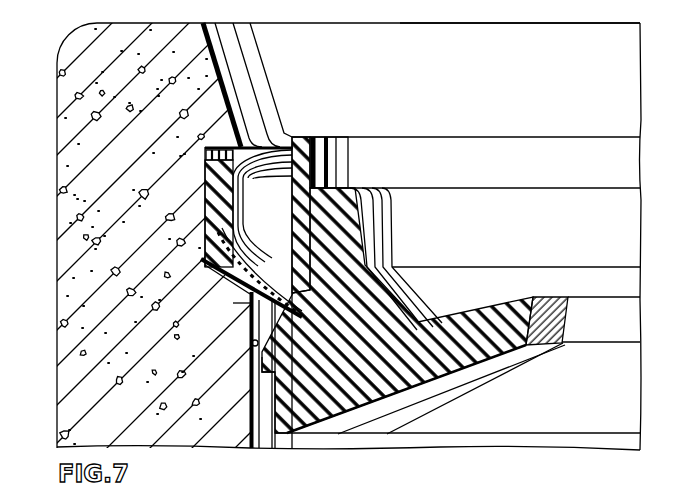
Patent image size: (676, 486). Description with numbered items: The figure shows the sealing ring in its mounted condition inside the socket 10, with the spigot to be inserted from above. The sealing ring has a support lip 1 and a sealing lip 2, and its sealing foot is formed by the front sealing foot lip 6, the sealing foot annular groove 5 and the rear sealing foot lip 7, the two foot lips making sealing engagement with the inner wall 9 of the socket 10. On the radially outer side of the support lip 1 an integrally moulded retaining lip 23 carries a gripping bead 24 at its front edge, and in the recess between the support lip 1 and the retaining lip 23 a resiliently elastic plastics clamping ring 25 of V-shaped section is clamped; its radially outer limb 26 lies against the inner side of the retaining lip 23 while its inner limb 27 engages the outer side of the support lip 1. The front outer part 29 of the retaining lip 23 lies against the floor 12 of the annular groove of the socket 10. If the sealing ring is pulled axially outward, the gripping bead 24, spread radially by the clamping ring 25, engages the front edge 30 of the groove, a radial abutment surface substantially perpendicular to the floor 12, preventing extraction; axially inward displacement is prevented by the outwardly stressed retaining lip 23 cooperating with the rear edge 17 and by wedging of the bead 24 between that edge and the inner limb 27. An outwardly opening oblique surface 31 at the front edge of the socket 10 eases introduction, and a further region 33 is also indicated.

The support lip 1 is at (520, 247).
The sealing lip 2 is at (585, 372).
The sealing foot annular groove 5 is at (266, 372).
The front sealing foot lip 6 is at (259, 370).
The rear sealing foot lip 7 is at (284, 374).
The inner wall of the socket 9 is at (248, 343).
The socket 10 is at (115, 221).
The annular groove floor 12 is at (200, 253).
The rear edge 17 is at (240, 304).
The retaining lip 23 is at (214, 272).
The gripping bead 24 is at (253, 136).
The clamping ring 25 is at (405, 137).
The radially outer limb 26 is at (250, 240).
The inner limb 27 is at (305, 136).
The front outer part of the holding lip 29 is at (207, 181).
The front edge of the annular groove 30 is at (240, 143).
The oblique surface 31 is at (571, 96).
The lower pipe region 33 is at (349, 254).